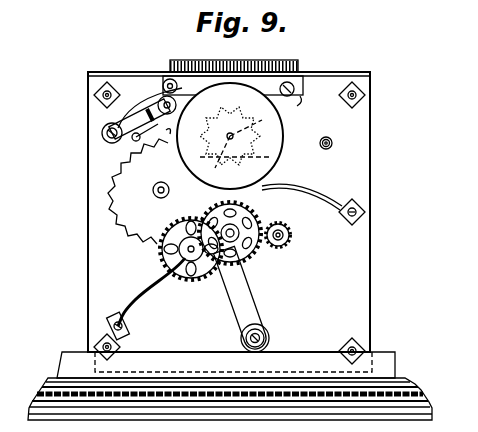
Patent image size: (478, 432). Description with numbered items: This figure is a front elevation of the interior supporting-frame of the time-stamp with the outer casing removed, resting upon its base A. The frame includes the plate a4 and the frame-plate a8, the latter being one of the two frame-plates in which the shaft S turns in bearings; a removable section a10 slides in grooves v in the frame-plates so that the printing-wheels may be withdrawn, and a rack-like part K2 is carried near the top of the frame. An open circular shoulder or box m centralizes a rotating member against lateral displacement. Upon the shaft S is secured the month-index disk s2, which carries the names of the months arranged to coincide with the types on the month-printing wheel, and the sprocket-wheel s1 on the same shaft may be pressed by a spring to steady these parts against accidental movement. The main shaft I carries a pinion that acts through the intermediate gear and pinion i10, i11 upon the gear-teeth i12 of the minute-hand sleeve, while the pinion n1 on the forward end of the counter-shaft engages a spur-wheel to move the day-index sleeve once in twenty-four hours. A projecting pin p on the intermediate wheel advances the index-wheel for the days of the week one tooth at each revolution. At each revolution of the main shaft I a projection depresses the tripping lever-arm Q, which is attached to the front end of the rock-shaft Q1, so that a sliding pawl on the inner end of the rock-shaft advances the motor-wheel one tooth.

The plate a4 is at (229, 200).
The frame-plate a8 is at (305, 273).
The removable section a10 is at (170, 80).
The open circular shoulder or box m is at (234, 57).
The rack carrier bar K2 is at (291, 63).
The groove v is at (291, 96).
The projecting pin p is at (121, 152).
The sprocket-wheel s1 is at (282, 113).
The month-index disk s2 is at (218, 160).
The intermediate gear i10 is at (146, 299).
The intermediate pinion i11 is at (165, 251).
The gear-teeth i12 is at (233, 231).
The shaft I is at (247, 259).
The pinion n1 is at (286, 240).
The tripping lever-arm Q is at (241, 299).
The rock-shaft Q1 is at (263, 337).
The base A is at (230, 386).